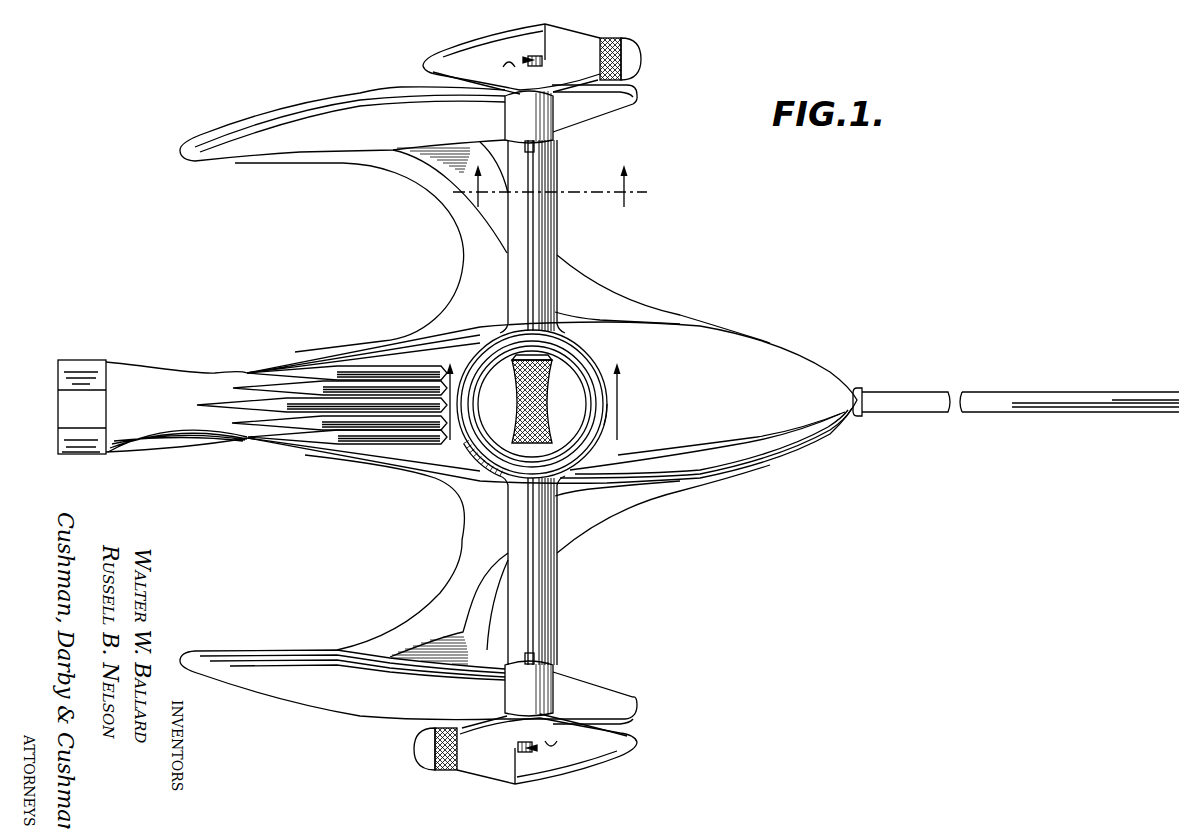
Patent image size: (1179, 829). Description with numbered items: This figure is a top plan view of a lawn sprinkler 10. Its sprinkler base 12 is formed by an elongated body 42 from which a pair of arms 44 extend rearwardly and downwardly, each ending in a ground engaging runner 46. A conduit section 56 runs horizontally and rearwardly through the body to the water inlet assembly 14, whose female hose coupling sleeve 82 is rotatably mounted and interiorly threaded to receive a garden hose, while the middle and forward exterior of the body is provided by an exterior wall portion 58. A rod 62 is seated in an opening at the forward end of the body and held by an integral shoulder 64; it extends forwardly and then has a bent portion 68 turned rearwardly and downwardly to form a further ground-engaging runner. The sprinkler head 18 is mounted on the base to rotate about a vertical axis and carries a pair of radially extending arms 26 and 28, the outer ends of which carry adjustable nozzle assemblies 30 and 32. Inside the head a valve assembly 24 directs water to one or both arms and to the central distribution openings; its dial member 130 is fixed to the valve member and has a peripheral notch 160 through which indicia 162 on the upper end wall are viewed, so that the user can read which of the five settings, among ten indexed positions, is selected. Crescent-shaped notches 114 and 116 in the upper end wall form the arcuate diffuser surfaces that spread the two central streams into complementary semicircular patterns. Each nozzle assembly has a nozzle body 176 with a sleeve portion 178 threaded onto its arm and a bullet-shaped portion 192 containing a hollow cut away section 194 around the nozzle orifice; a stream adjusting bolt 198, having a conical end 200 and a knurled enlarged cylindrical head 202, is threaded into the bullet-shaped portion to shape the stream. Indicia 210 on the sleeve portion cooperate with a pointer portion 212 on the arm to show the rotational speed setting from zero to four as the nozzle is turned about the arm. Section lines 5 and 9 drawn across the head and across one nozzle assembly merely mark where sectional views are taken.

The lawn sprinkler 10 is at (745, 303).
The sprinkler base 12 is at (722, 468).
The water inlet assembly 14 is at (97, 348).
The sprinkler head 18 is at (560, 227).
The valve assembly 24 is at (606, 416).
The arm 26 is at (545, 593).
The arm 28 is at (547, 181).
The adjustable nozzle assembly 30 is at (645, 744).
The adjustable nozzle assembly 32 is at (655, 52).
The body 42 is at (778, 344).
The arms 44 is at (468, 231).
The ground engaging runners 46 is at (370, 102).
The conduit section 56 is at (180, 427).
The exterior wall portion 58 is at (782, 405).
The rod 62 is at (1030, 398).
The integral shoulder 64 is at (861, 413).
The bent portion of rod 68 is at (1178, 412).
The female hose coupling sleeve 82 is at (88, 420).
The crescent-shaped notch 114 is at (600, 382).
The crescent-shaped notch 116 is at (452, 372).
The dial member 130 is at (516, 401).
The notch 160 is at (560, 358).
The indicia 162 is at (475, 340).
The nozzle body 176 is at (577, 38).
The sleeve portion 178 is at (522, 105).
The bullet-shaped portion 192 is at (457, 90).
The hollow cut away section 194 is at (515, 64).
The stream adjusting bolt 198 is at (540, 55).
The conical end of bolt 200 is at (535, 60).
The enlarged cylindrical head 202 is at (640, 70).
The indicia 210 is at (525, 126).
The pointer portion 212 is at (535, 148).
The section line 5- 5 is at (531, 413).
The section line 9- 9 is at (550, 186).